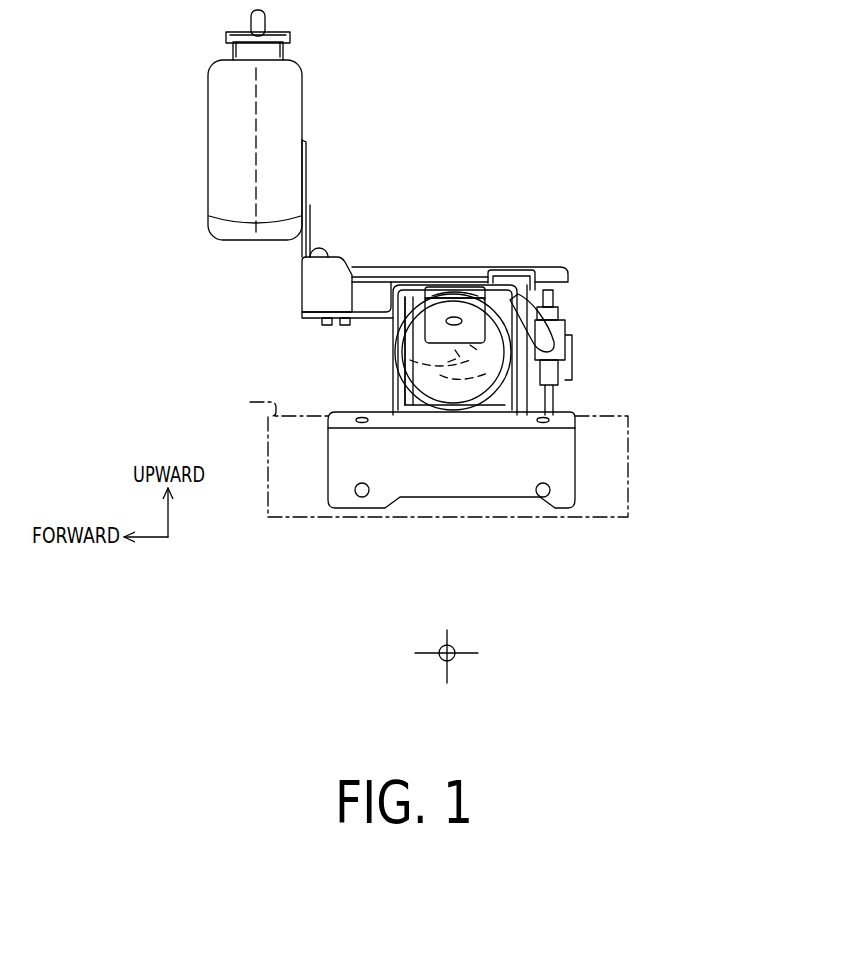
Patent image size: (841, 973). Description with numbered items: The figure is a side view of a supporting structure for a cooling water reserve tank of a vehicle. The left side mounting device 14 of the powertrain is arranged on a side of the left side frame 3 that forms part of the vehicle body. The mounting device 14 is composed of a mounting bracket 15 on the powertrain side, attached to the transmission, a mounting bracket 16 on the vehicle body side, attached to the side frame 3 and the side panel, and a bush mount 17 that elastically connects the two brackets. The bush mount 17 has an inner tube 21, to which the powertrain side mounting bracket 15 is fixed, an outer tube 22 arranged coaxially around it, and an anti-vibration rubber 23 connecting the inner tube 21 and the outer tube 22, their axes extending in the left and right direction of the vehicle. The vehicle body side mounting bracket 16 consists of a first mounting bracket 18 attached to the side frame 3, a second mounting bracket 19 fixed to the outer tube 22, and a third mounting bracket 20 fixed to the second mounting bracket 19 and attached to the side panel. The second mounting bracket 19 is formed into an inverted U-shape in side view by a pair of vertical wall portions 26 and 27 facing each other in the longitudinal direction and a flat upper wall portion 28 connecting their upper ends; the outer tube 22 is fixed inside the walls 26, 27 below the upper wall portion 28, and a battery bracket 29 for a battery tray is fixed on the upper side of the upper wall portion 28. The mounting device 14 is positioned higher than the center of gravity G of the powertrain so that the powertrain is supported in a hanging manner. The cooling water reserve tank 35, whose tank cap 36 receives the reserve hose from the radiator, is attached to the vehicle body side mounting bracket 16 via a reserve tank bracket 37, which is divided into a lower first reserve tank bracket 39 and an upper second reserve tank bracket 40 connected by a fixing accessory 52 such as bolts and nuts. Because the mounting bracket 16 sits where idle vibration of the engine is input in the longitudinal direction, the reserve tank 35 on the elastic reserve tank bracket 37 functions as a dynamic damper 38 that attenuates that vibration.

The left side frame 3 is at (250, 402).
The left side mounting device 14 is at (590, 308).
The mounting bracket on the powertrain side 15 is at (552, 300).
The mounting bracket on the vehicle body side 16 is at (446, 457).
The bush mount 17 is at (619, 361).
The first mounting bracket on the vehicle body side 18 is at (433, 500).
The second mounting bracket on the vehicle body side 19 is at (382, 389).
The third mounting bracket on the vehicle body side 20 is at (437, 349).
The inner tube 21 is at (505, 398).
The outer tube 22 is at (507, 330).
The anti-vibration rubber 23 is at (535, 365).
The vertical wall portion 26 is at (390, 367).
The vertical wall portion 27 is at (528, 300).
The upper wall portion 28 is at (510, 285).
The battery bracket 29 is at (447, 270).
The cooling water reserve tank 35 is at (222, 182).
The tank cap 36 is at (241, 30).
The reserve tank bracket 37 is at (280, 294).
The dynamic damper 38 is at (366, 158).
The first reserve tank bracket 39 is at (300, 318).
The second reserve tank bracket 40 is at (298, 272).
The fixing accessory 52 is at (344, 326).
The center of gravity G is at (453, 647).